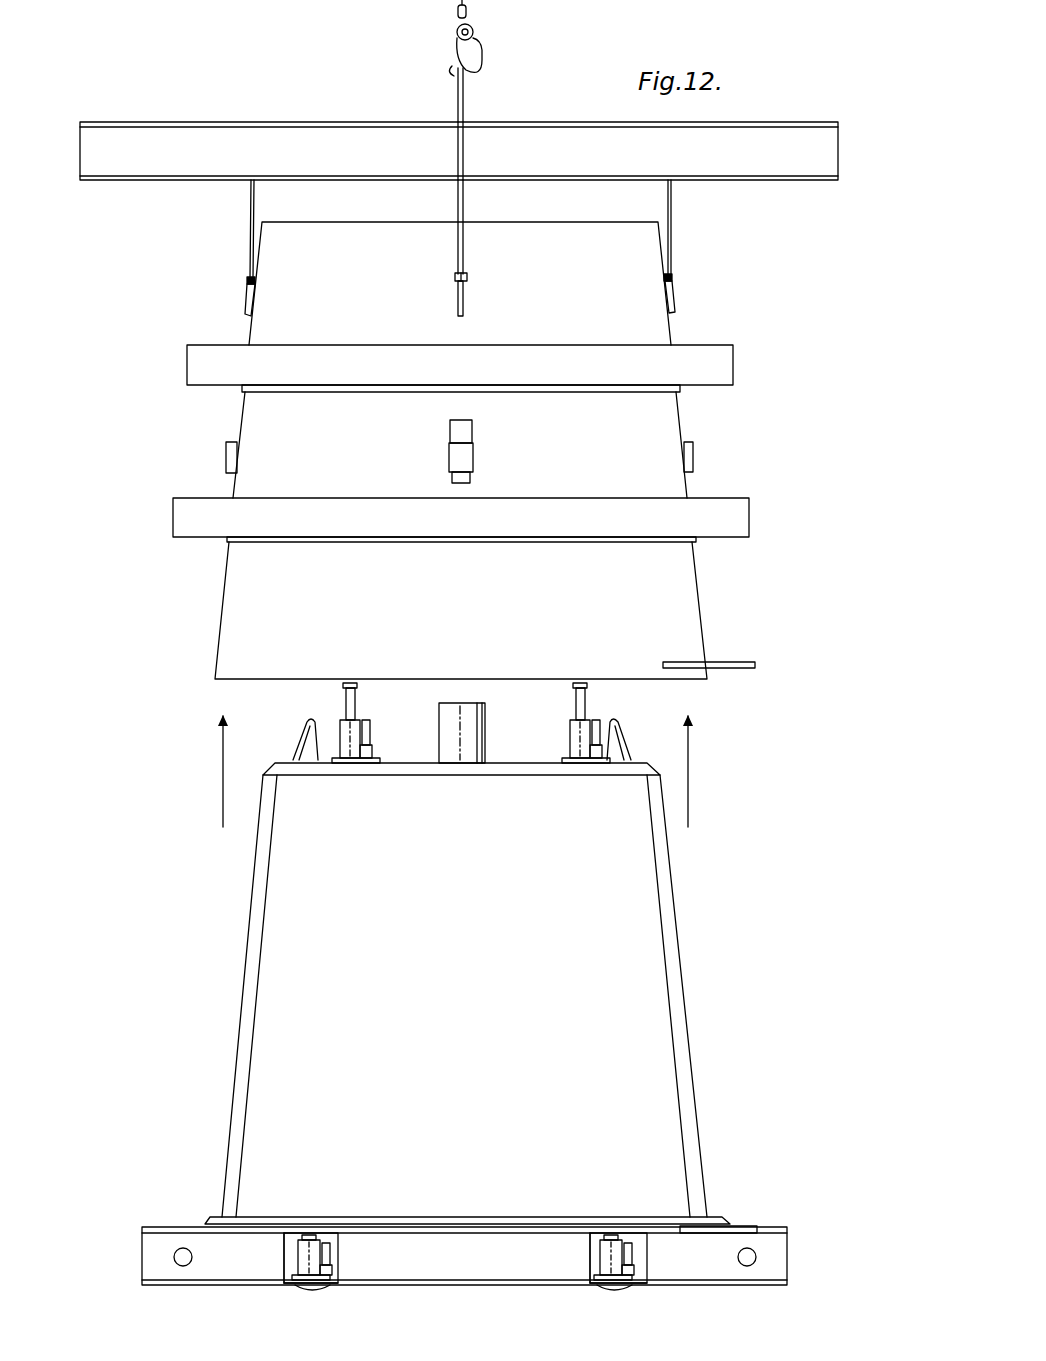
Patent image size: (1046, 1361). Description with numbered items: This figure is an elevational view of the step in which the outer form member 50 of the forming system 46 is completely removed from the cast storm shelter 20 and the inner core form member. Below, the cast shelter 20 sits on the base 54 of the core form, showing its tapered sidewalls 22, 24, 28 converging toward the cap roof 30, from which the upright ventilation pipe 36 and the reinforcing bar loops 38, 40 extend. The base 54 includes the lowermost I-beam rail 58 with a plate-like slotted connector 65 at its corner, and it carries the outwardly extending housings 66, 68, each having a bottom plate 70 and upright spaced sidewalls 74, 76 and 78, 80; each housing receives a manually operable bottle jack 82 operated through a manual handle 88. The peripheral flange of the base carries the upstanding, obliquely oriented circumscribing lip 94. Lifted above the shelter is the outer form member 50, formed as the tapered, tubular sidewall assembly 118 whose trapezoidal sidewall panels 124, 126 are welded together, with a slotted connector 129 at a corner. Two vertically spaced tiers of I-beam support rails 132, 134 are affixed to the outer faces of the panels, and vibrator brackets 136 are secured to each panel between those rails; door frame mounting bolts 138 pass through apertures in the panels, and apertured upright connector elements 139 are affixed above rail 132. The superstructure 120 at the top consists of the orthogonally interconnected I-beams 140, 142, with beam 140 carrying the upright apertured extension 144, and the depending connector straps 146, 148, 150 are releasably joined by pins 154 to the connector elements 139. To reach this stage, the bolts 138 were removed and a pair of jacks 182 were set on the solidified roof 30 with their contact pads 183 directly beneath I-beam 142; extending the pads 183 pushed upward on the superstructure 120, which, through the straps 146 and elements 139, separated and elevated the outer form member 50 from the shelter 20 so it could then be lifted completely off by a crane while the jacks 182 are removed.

The storm shelter 20 is at (778, 1000).
The sidewall 22 is at (398, 1018).
The sidewall 24 is at (678, 935).
The sidewall 28 is at (253, 860).
The cap roof 30 is at (448, 762).
The ventilation pipe 36 is at (470, 733).
The reinforcing bar loop 38 is at (305, 735).
The reinforcing bar loop 40 is at (620, 735).
The forming system 46 is at (163, 319).
The outer form member 50 is at (191, 620).
The base 54 is at (780, 1220).
The I-beam rail 58 is at (763, 1240).
The slotted connector 65 is at (735, 1228).
The housing 66 is at (341, 1222).
The housing 68 is at (581, 1238).
The bottom plate 70 is at (305, 1290).
The sidewall 74 is at (284, 1252).
The sidewall 76 is at (338, 1273).
The sidewall 78 is at (590, 1252).
The sidewall 80 is at (648, 1273).
The bottle jack 82 is at (308, 1242).
The manual handle 88 is at (333, 1248).
The lip 94 is at (222, 1217).
The sidewall assembly 118 is at (136, 499).
The superstructure 120 is at (155, 194).
The sidewall panel 124 is at (410, 593).
The sidewall panel 126 is at (690, 492).
The slotted connector 129 is at (730, 662).
The I-beam support rail 132 is at (712, 375).
The I-beam support rail 134 is at (727, 528).
The vibrator bracket 136 is at (226, 455).
The door frame mounting bolt 138 is at (239, 349).
The connector element 139 is at (244, 302).
The I-beam 140 is at (457, 163).
The I-beam 142 is at (820, 158).
The apertured extension 144 is at (458, 110).
The connector strap 146 is at (249, 204).
The connector strap 148 is at (458, 258).
The connector strap 150 is at (671, 236).
The pin 154 is at (255, 279).
The jack 182 is at (346, 742).
The contact pad 183 is at (350, 683).